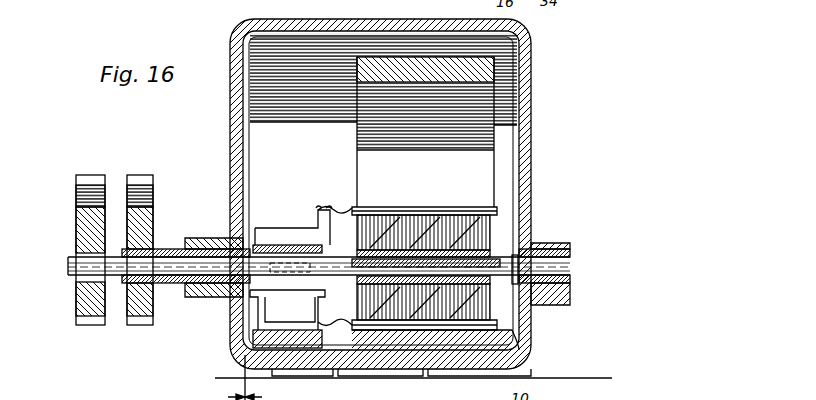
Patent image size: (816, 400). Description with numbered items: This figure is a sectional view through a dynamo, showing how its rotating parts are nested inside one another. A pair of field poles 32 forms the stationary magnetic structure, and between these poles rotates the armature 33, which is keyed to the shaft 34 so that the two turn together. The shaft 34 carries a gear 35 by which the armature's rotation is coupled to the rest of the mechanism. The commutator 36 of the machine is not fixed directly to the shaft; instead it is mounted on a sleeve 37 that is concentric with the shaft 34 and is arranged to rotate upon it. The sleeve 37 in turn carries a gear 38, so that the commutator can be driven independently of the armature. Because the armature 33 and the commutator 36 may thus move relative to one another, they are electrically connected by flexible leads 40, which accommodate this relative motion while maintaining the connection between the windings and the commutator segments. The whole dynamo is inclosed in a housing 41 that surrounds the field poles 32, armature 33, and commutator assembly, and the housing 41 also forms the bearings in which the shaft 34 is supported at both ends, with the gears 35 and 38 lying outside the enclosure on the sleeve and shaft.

The field poles 32 is at (367, 165).
The armature 33 is at (485, 235).
The shaft 34 is at (74, 270).
The gear 35 is at (82, 229).
The commutator 36 is at (277, 233).
The sleeve 37 is at (166, 250).
The gear 38 is at (148, 232).
The flexible leads 40 is at (340, 208).
The housing 41 is at (521, 133).